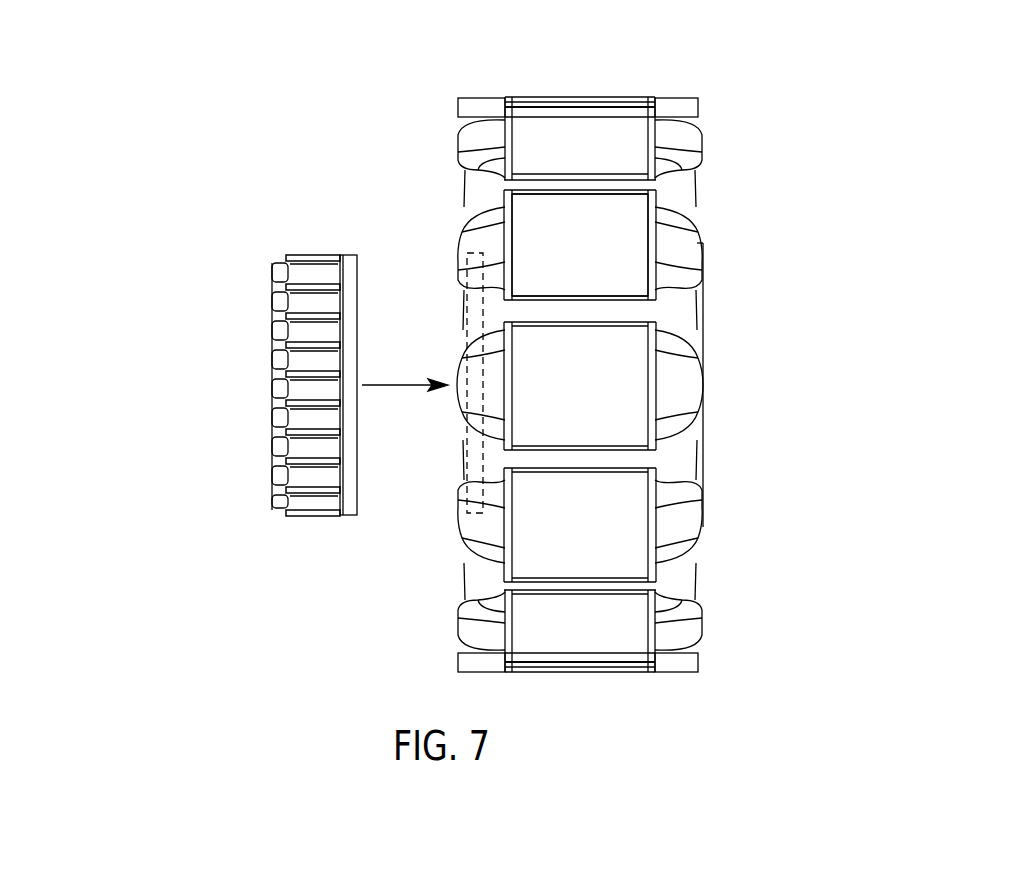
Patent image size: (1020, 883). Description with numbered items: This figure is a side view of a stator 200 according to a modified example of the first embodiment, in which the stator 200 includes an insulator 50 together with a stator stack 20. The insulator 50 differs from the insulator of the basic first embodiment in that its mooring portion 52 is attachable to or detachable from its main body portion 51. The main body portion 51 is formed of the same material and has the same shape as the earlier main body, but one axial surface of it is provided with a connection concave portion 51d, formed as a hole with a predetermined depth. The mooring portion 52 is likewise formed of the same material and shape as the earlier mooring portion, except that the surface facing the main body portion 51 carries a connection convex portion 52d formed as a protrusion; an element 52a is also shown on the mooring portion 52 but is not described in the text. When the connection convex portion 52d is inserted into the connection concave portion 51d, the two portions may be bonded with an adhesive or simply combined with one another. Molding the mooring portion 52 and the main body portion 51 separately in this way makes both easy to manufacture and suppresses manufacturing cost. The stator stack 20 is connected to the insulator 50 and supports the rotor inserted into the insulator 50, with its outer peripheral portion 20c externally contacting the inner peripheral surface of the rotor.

The stator 200 is at (106, 42).
The insulator 50 is at (205, 114).
The mooring portion 52 is at (285, 253).
The coil connection terminal 52a is at (283, 434).
The connection convex portion 52d is at (347, 517).
The main body portion 51 is at (702, 97).
The connection concave portion 51d is at (480, 470).
The stator stack 20 is at (751, 156).
The outer peripheral portion 20c is at (635, 268).